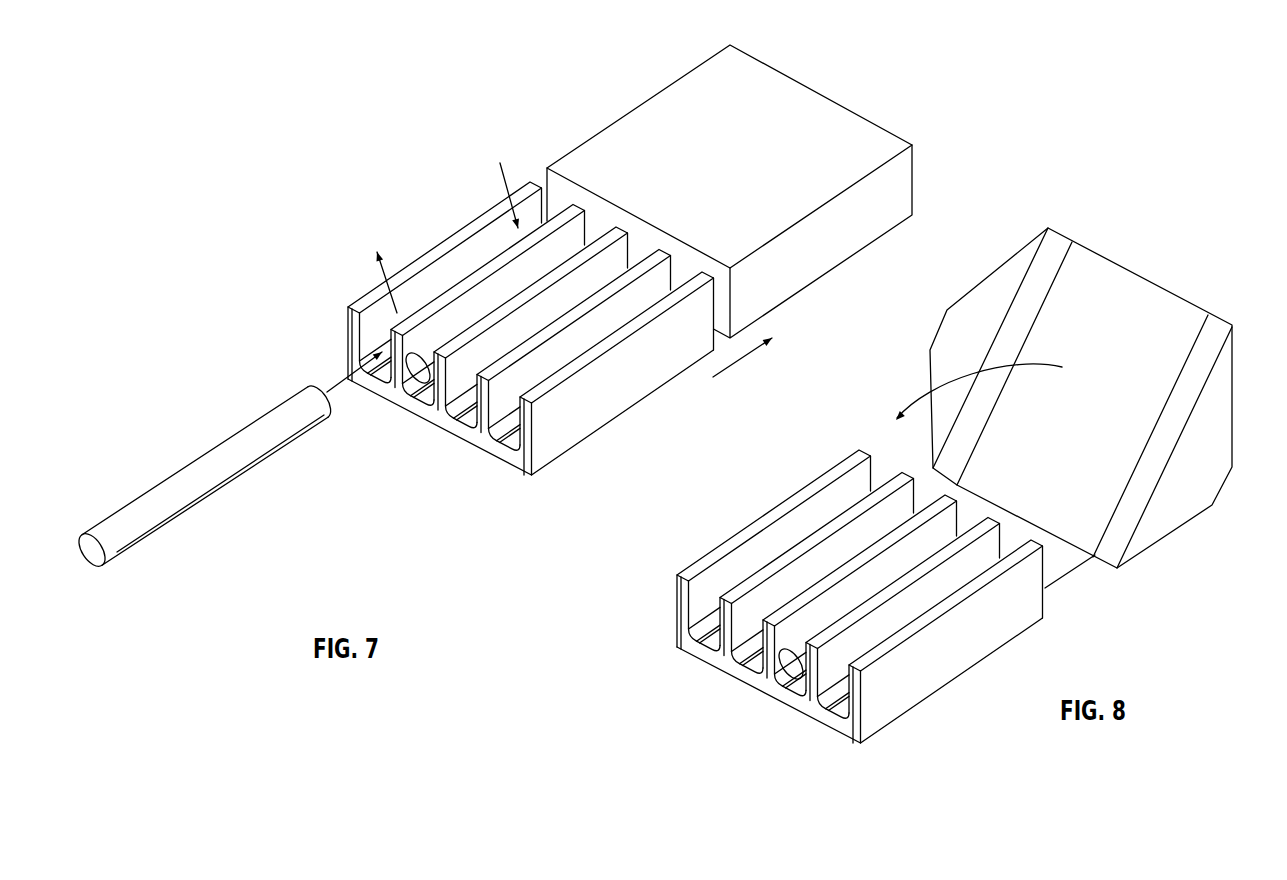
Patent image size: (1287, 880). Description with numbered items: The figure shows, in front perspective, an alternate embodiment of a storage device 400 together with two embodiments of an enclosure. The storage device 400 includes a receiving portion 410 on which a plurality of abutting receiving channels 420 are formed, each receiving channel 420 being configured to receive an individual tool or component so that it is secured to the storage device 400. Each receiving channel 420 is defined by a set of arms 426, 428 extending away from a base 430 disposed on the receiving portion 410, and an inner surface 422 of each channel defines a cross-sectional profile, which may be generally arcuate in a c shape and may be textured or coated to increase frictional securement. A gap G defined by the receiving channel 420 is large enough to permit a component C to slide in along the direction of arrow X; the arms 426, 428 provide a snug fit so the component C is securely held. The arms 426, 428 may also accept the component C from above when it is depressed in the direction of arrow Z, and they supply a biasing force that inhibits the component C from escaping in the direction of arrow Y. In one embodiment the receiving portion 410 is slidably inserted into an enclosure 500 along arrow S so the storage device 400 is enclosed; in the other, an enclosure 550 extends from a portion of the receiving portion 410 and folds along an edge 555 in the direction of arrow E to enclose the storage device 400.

In FIG. 7, the storage device 400 is at (308, 270).
In FIG. 8, the storage device 400 is at (750, 497).
In FIG. 7, the receiving portion 410 is at (548, 453).
In FIG. 8, the receiving portion 410 is at (860, 691).
In FIG. 7, the receiving channel 420 is at (445, 267).
In FIG. 8, the receiving channel 420 is at (849, 596).
In FIG. 7, the inner surface 422 is at (507, 437).
In FIG. 8, the inner surface 422 is at (769, 708).
In FIG. 7, the arm 426 is at (533, 417).
In FIG. 7, the arm 428 is at (477, 433).
In FIG. 7, the base 430 is at (508, 457).
In FIG. 7, the enclosure 500 is at (791, 62).
In FIG. 8, the enclosure 550 is at (1129, 242).
In FIG. 8, the edge 555 is at (1046, 590).
In FIG. 7, the component C is at (226, 495).
In FIG. 8, the component C is at (793, 675).
In FIG. 7, the gap G is at (450, 393).
In FIG. 7, the arrow X is at (348, 371).
In FIG. 7, the arrow Y is at (382, 268).
In FIG. 7, the arrow Z is at (503, 184).
In FIG. 7, the arrow S is at (759, 357).
In FIG. 8, the arrow E is at (958, 392).